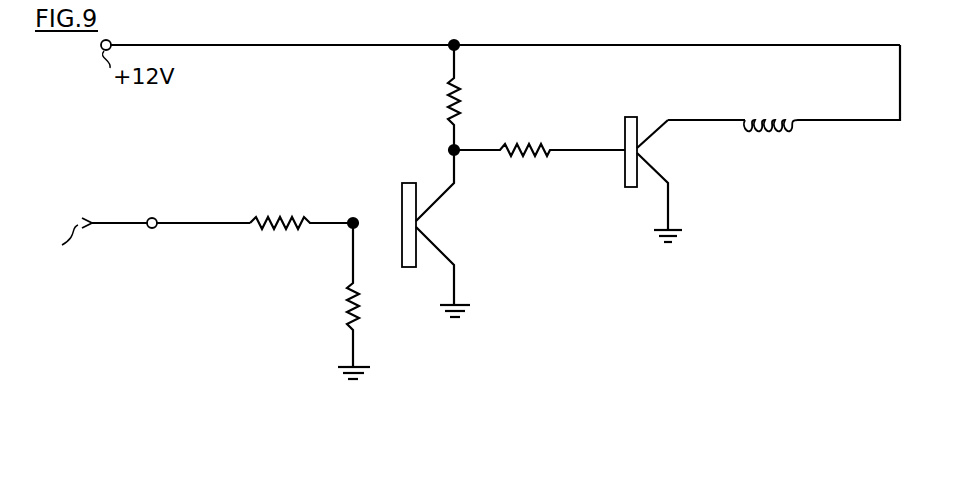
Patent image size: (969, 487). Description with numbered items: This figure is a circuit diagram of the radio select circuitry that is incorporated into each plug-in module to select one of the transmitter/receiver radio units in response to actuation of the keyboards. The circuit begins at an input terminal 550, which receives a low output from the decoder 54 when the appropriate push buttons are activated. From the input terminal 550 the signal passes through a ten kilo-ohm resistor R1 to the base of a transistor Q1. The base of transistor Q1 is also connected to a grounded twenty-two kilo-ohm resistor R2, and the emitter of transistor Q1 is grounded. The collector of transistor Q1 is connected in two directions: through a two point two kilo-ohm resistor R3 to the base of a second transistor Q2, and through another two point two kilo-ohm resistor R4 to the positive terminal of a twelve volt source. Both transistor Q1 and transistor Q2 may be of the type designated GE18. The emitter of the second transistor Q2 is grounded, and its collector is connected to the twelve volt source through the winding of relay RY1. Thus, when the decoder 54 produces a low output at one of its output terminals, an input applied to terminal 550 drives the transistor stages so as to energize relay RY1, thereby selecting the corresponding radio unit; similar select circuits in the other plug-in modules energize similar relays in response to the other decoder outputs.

The input terminal 550 is at (152, 218).
The decoder 54 is at (137, 258).
The resistor R1 is at (300, 198).
The resistor R2 is at (349, 300).
The resistor R3 is at (548, 155).
The resistor R4 is at (458, 88).
The transistor Q1 is at (408, 255).
The second transistor Q2 is at (630, 178).
The relay RY1 is at (754, 133).